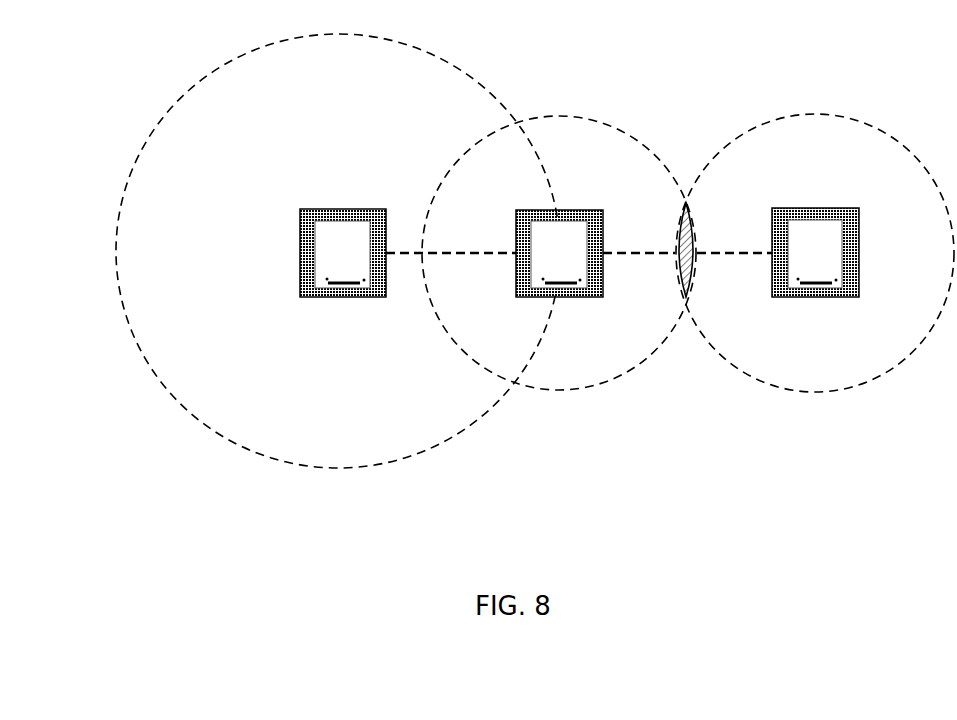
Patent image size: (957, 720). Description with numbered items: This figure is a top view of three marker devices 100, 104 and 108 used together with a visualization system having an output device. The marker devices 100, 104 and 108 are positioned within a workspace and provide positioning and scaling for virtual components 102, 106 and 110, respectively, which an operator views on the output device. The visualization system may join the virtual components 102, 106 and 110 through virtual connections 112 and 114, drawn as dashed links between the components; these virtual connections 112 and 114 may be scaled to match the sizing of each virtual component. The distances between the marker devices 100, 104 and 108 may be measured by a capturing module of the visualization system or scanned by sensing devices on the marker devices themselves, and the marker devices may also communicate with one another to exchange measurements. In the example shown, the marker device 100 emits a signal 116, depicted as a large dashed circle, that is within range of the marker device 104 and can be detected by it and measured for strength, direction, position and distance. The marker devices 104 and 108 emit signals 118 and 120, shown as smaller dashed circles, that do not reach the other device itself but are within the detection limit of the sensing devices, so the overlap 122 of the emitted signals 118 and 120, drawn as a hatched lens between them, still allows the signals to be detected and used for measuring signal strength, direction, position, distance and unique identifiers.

The marker device 100 is at (339, 222).
The virtual component 102 is at (299, 233).
The marker device 104 is at (578, 223).
The virtual component 106 is at (513, 221).
The marker device 108 is at (809, 223).
The virtual component 110 is at (861, 237).
The virtual connection 112 is at (406, 261).
The virtual connection 114 is at (733, 263).
The signal 116 is at (468, 77).
The signal 118 is at (598, 112).
The signal 120 is at (877, 125).
The overlap 122 is at (686, 272).